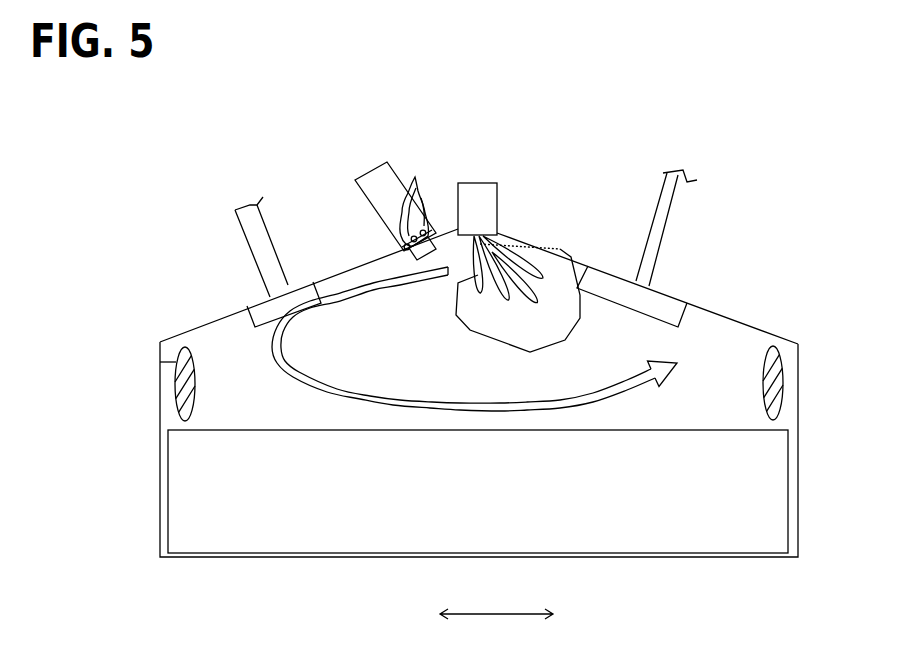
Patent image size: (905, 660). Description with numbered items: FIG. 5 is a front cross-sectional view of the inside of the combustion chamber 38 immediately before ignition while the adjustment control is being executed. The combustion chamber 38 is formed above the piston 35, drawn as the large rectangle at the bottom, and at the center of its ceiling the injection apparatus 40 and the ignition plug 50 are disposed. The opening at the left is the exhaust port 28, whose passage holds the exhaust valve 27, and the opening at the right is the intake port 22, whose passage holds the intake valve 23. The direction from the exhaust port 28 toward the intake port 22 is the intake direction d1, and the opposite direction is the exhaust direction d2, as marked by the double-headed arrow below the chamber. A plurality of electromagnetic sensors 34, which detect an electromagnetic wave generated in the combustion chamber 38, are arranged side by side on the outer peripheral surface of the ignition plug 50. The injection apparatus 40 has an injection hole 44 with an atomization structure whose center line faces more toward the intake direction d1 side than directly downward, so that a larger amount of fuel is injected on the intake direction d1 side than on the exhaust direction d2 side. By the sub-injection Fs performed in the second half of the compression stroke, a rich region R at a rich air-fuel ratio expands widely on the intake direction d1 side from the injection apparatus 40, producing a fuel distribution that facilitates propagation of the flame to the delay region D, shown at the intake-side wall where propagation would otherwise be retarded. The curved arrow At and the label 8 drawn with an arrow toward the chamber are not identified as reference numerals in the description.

The combustion device 8 is at (135, 307).
The intake port 22 is at (687, 302).
The intake valve 23 is at (670, 199).
The exhaust valve 27 is at (252, 228).
The exhaust port 28 is at (256, 305).
The electromagnetic sensors 34 is at (413, 178).
The piston 35 is at (202, 502).
The combustion chamber 38 is at (177, 390).
The injection apparatus 40 is at (476, 182).
The injection hole 44 is at (500, 238).
The ignition plug 50 is at (378, 178).
The rich region R is at (477, 330).
The sub-injection Fs is at (536, 329).
The air flow At is at (590, 397).
The delay region D is at (760, 388).
The intake direction d1 is at (516, 616).
The exhaust direction d2 is at (419, 616).